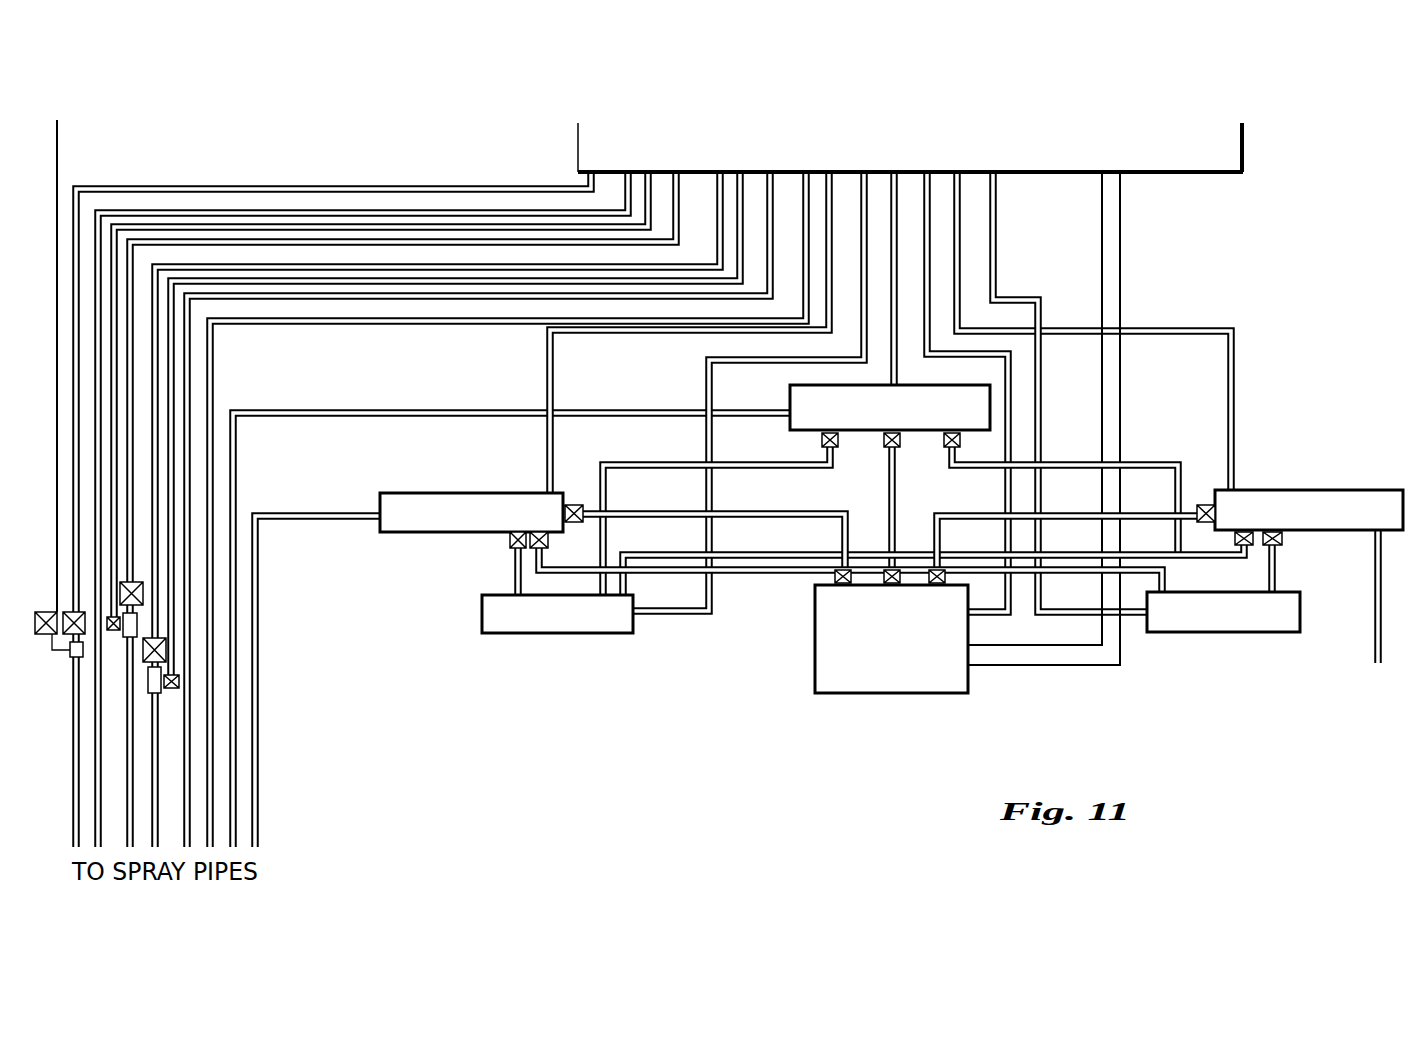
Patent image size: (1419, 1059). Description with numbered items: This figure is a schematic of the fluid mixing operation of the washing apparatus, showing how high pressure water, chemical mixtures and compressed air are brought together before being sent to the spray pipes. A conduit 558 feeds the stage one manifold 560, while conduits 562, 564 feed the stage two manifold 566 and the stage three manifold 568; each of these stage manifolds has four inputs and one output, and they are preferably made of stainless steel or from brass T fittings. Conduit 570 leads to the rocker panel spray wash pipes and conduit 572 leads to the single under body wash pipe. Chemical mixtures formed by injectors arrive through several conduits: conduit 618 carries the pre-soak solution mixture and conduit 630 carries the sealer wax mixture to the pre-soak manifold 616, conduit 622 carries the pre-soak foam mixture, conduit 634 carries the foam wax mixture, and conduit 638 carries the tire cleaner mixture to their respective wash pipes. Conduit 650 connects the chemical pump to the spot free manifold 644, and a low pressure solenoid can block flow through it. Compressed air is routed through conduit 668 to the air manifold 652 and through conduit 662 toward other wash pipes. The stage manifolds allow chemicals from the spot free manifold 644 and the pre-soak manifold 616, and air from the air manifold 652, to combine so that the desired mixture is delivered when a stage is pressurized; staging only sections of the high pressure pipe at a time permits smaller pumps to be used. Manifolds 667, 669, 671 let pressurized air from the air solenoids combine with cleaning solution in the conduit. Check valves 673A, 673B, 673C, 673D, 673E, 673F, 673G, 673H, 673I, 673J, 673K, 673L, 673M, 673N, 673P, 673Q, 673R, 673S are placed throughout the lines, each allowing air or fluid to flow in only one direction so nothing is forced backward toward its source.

The conduit 662 is at (62, 352).
The conduit 638 is at (361, 186).
The conduit 622 is at (682, 190).
The conduit 634 is at (724, 190).
The conduit 650 is at (866, 190).
The conduit 562 is at (898, 190).
The conduit 564 is at (962, 185).
The conduit 668 is at (996, 246).
The conduit 630 is at (1100, 255).
The conduit 618 is at (1122, 246).
The conduit 570 is at (214, 348).
The conduit 572 is at (191, 398).
The conduit 558 is at (555, 376).
The stage two manifold 566 is at (790, 390).
The stage one manifold 560 is at (418, 494).
The stage three manifold 568 is at (1350, 489).
The spot free manifold 644 is at (582, 636).
The pre-soak manifold 616 is at (968, 688).
The air manifold 652 is at (1270, 633).
The check valve 673A is at (1253, 540).
The check valve 673B is at (1265, 548).
The check valve 673C is at (1198, 500).
The check valve 673D is at (955, 450).
The check valve 673E is at (890, 449).
The check valve 673F is at (822, 440).
The check valve 673G is at (835, 577).
The check valve 673H is at (950, 578).
The check valve 673I is at (903, 568).
The check valve 673J is at (582, 503).
The check valve 673K is at (510, 540).
The check valve 673L is at (535, 549).
The check valve 673M is at (143, 594).
The check valve 673N is at (166, 650).
The check valve 673P is at (179, 682).
The check valve 673Q is at (68, 637).
The check valve 673R is at (46, 634).
The check valve 673S is at (115, 632).
The manifold 669 is at (137, 626).
The manifold 671 is at (161, 680).
The manifold 667 is at (76, 657).